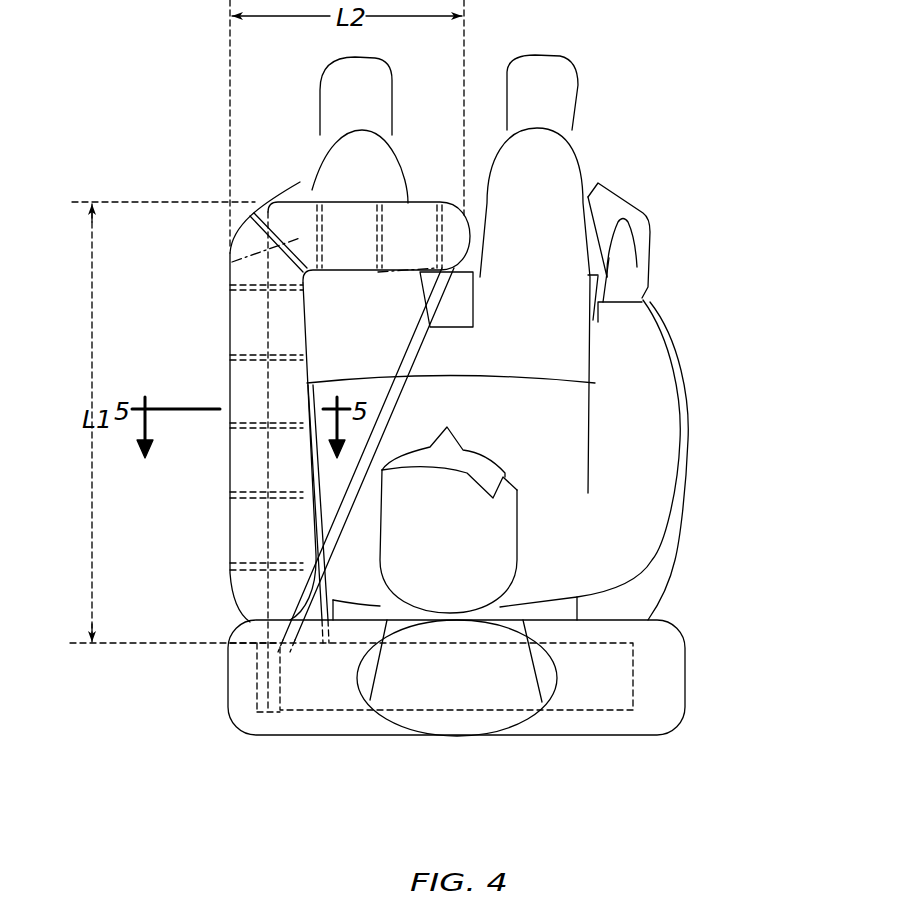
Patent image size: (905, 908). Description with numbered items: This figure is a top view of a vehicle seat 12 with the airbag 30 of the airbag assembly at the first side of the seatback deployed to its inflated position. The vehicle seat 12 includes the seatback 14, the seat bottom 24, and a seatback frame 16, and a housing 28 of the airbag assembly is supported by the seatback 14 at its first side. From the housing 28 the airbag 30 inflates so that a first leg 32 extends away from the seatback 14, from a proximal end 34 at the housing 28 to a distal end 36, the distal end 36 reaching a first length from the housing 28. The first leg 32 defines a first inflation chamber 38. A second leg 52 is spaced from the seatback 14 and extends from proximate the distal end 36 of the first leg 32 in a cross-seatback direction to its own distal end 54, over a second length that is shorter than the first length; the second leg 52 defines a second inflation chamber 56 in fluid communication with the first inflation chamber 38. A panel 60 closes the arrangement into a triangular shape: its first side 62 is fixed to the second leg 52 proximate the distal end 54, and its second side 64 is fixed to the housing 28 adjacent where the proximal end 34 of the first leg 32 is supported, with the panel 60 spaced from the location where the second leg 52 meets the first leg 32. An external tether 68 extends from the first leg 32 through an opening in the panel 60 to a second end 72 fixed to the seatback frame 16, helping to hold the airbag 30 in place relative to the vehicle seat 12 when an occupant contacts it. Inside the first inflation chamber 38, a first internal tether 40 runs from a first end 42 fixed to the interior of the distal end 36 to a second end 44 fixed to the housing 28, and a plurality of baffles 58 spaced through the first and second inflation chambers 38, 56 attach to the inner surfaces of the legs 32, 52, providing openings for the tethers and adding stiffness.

The vehicle seat 12 is at (742, 651).
The seatback 14 is at (684, 555).
The seatback frame 16 is at (626, 712).
The seat bottom 24 is at (473, 269).
The housing 28 is at (262, 712).
The airbag 30 is at (200, 194).
The first leg 32 is at (217, 297).
The proximal end 34 is at (234, 606).
The distal end 36 is at (229, 228).
The first inflation chamber 38 is at (249, 306).
The first internal tether 40 is at (264, 508).
The first end 42 is at (271, 212).
The second end 44 is at (264, 707).
The second leg 52 is at (324, 195).
The distal end 54 is at (471, 231).
The second inflation chamber 56 is at (368, 221).
The baffles 58 is at (263, 233).
The panel 60 is at (402, 405).
The first side 62 is at (466, 275).
The second side 64 is at (299, 640).
The external tether 68 is at (330, 498).
The second end 72 is at (345, 637).